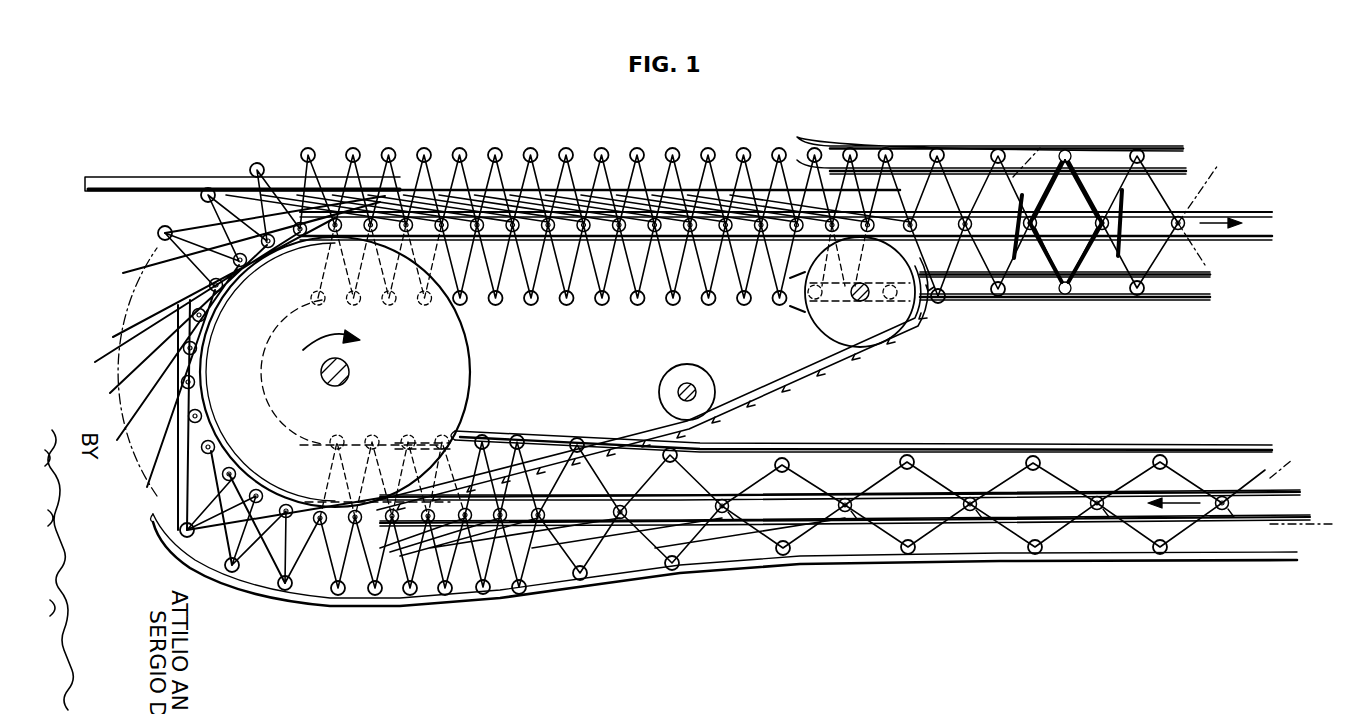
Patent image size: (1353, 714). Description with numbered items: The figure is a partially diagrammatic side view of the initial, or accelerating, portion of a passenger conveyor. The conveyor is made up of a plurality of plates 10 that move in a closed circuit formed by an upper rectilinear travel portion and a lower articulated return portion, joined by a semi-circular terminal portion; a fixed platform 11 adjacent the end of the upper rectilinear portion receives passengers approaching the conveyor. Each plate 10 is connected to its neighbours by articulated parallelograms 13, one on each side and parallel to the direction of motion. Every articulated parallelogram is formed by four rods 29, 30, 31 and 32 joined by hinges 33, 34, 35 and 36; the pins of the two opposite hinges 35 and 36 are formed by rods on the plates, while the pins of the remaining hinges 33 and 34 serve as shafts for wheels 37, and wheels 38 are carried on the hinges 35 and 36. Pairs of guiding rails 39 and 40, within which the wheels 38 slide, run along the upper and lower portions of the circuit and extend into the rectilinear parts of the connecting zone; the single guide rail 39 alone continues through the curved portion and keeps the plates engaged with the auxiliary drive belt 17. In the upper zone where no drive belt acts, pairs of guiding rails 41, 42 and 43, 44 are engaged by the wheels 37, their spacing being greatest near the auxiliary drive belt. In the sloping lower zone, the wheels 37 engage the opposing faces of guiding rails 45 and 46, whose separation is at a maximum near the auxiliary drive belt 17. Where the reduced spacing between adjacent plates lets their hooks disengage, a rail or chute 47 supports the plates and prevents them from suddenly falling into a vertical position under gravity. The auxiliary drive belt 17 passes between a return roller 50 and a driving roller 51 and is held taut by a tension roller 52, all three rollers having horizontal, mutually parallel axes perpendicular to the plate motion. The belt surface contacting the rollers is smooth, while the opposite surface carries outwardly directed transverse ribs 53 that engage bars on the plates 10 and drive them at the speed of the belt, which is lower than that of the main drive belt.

The plates 10 is at (700, 190).
The fixed platform 11 is at (165, 182).
The articulated parallelograms 13 is at (432, 170).
The auxiliary drive belt 17 is at (630, 238).
The rod 29 is at (1090, 190).
The rod 30 is at (1045, 195).
The rod 31 is at (1088, 288).
The rod 32 is at (1045, 288).
The hinge 33 is at (1066, 149).
The hinge 34 is at (1065, 295).
The hinge 35 is at (1118, 232).
The hinge 36 is at (1020, 232).
The wheels 37 is at (387, 148).
The wheels 38 is at (845, 498).
The guiding rail 39 is at (196, 380).
The guiding rail 40 is at (1232, 240).
The guiding rail 41 is at (1160, 146).
The guiding rail 42 is at (1185, 172).
The guiding rail 43 is at (1205, 277).
The guiding rail 44 is at (1168, 299).
The guiding rail 45 is at (525, 430).
The guiding rail 46 is at (490, 603).
The rail or chute 47 is at (215, 578).
The return roller 50 is at (838, 318).
The driving roller 51 is at (468, 366).
The tension roller 52 is at (670, 375).
The ribs 53 is at (848, 362).